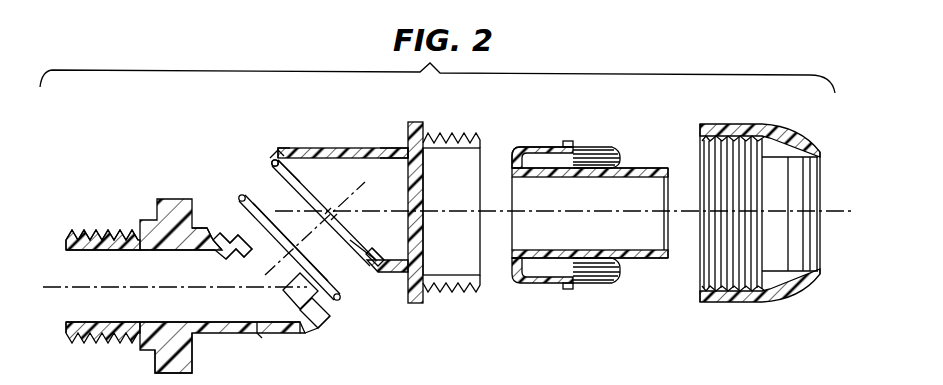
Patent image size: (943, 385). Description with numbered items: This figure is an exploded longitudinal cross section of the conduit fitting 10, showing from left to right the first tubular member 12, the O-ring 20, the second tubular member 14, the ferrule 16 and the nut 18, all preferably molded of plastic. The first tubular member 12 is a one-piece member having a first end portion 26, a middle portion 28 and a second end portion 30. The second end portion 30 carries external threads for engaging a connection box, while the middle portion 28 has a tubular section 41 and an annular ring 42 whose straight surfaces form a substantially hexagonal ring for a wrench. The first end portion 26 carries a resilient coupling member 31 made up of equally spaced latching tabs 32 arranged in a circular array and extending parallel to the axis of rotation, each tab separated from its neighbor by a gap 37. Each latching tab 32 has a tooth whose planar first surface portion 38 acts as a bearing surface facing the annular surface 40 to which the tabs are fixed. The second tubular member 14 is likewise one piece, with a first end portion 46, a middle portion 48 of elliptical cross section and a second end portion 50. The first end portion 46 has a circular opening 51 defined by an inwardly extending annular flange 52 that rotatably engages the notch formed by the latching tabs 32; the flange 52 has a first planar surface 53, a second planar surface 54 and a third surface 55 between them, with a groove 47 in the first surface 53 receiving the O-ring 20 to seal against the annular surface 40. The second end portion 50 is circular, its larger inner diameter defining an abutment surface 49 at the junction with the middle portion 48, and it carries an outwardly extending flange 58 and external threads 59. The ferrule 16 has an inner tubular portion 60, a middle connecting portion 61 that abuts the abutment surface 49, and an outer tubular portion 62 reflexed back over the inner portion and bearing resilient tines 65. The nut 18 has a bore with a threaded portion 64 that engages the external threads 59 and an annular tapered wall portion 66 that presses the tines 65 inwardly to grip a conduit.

The conduit fitting 10 is at (203, 118).
The first tubular member 12 is at (88, 232).
The second tubular member 14 is at (344, 147).
The ferrule 16 is at (546, 145).
The nut 18 is at (731, 126).
The O-ring 20 is at (345, 298).
The first end portion 26 is at (208, 230).
The middle portion 28 is at (176, 199).
The second end portion 30 is at (122, 232).
The resilient coupling member 31 is at (324, 323).
The latching tab 32 is at (225, 233).
The gap 37 is at (232, 258).
The first surface portion 38 is at (278, 305).
The annular surface 40 is at (302, 332).
The tubular section 41 is at (262, 335).
The annular ring 42 is at (194, 353).
The first end portion 46 is at (280, 146).
The groove 47 is at (270, 160).
The middle portion 48 is at (394, 147).
The abutment surface 49 is at (425, 188).
The second end portion 50 is at (467, 133).
The circular opening 51 is at (286, 180).
The annular flange 52 is at (292, 171).
The first planar surface 53 is at (363, 264).
The second planar surface 54 is at (381, 258).
The third surface 55 is at (374, 251).
The flange 58 is at (420, 122).
The external threads 59 is at (462, 292).
The inner tubular portion 60 is at (648, 167).
The middle connecting portion 61 is at (508, 150).
The outer tubular portion 62 is at (560, 141).
The threaded portion 64 is at (698, 153).
The resilient tines 65 is at (600, 146).
The tapered wall portion 66 is at (780, 152).